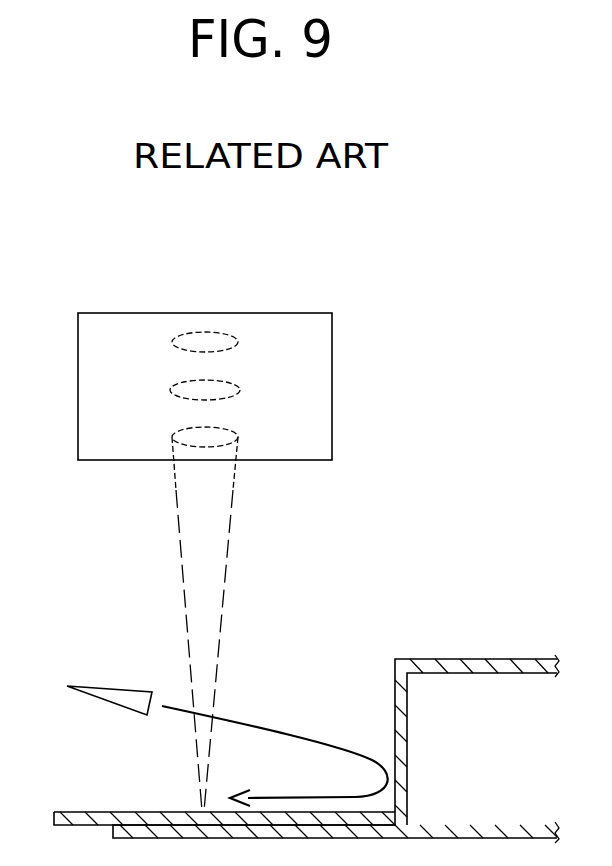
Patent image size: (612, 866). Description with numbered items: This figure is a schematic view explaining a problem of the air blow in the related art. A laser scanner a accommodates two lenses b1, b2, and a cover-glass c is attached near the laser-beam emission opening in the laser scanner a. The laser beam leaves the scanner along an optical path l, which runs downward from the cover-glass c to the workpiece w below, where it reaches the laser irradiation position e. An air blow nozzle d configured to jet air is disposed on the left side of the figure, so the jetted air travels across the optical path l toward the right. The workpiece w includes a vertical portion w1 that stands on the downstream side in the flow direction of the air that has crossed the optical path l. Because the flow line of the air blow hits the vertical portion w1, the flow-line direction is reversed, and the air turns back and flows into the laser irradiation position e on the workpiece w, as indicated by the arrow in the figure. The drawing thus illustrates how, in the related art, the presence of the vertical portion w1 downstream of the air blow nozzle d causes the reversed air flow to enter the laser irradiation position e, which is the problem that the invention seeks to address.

The laser scanner a is at (334, 390).
The lens b1 is at (223, 333).
The lens b2 is at (185, 383).
The cover-glass c is at (190, 452).
The optical path l is at (213, 618).
The air blow nozzle d is at (128, 690).
The laser irradiation position e is at (198, 809).
The workpiece w is at (82, 812).
The vertical portion w1 is at (394, 730).